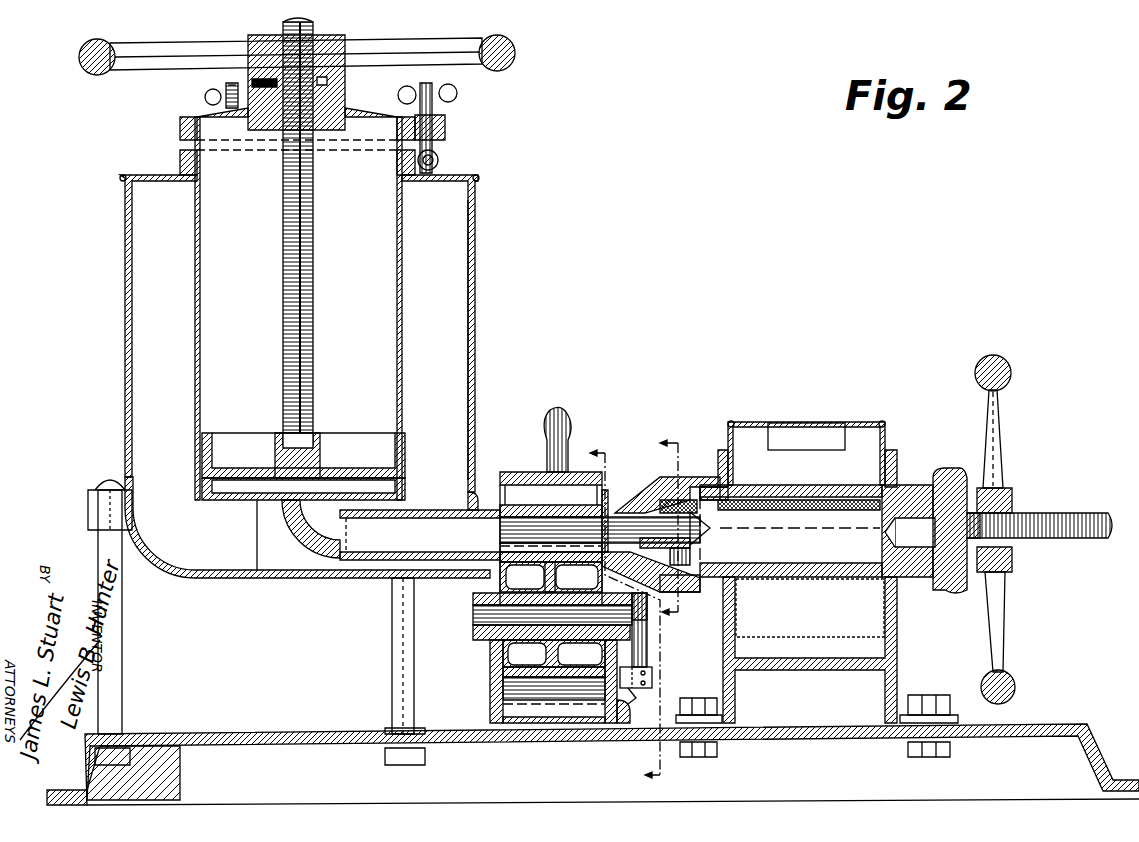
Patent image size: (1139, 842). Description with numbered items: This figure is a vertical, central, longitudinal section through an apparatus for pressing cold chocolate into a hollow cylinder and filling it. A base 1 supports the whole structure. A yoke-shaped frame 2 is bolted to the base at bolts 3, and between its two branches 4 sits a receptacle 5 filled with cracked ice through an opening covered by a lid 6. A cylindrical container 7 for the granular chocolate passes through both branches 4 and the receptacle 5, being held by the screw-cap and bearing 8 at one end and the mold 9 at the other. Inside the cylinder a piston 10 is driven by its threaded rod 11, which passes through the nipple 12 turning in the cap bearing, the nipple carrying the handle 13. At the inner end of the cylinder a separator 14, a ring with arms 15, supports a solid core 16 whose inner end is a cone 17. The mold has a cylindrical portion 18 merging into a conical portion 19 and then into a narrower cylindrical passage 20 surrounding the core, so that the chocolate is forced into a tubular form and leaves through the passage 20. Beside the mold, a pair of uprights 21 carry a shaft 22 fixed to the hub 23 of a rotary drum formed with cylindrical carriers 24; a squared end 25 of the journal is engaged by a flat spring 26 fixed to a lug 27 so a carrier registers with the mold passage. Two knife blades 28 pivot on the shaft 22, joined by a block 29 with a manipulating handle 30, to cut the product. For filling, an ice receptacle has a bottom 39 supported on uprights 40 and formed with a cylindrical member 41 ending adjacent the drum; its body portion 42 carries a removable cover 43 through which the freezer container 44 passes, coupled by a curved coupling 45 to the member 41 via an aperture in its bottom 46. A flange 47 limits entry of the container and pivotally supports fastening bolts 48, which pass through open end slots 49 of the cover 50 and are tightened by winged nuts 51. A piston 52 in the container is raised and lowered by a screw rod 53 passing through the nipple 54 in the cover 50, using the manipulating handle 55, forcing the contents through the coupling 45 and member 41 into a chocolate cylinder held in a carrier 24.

The base 1 is at (268, 734).
The frame 2 is at (896, 666).
The bolts 3 is at (926, 706).
The branches 4 is at (721, 452).
The receptacle 5 is at (820, 640).
The lid 6 is at (836, 422).
The cylindrical container 7 is at (793, 522).
The screw-cap and bearing 8 is at (934, 482).
The mold 9 is at (690, 492).
The piston 10 is at (880, 548).
The piston rod 11 is at (1030, 518).
The nipple 12 is at (1005, 500).
The handle 13 is at (1012, 608).
The separator 14 is at (684, 582).
The arms 15 is at (724, 494).
The core 16 is at (692, 548).
The cone 17 is at (712, 528).
The cylindrical portion 18 is at (666, 500).
The conical portion 19 is at (642, 506).
The cylindrical passage 20 is at (604, 572).
The uprights 21 is at (490, 680).
The shaft 22 is at (473, 614).
The hub 23 is at (530, 635).
The cylindrical carriers 24 is at (520, 525).
The squared end 25 is at (650, 622).
The flat spring 26 is at (650, 679).
The lug 27 is at (642, 692).
The blades 28 is at (604, 495).
The block 29 is at (566, 472).
The manipulating handle 30 is at (552, 412).
The bottom 39 is at (190, 580).
The uprights 40 is at (113, 672).
The cylindrical member 41 is at (372, 560).
The cylindrical body portion 42 is at (475, 268).
The removable cover 43 is at (470, 176).
The container 44 is at (200, 310).
The curved coupling 45 is at (290, 518).
The container bottom 46 is at (208, 500).
The flange 47 is at (182, 160).
The fastening bolts 48 is at (232, 84).
The open end slots 49 is at (442, 130).
The cover 50 is at (182, 120).
The winged nuts 51 is at (208, 94).
The piston 52 is at (368, 445).
The screw rod 53 is at (314, 286).
The nipple 54 is at (268, 130).
The manipulating handle 55 is at (145, 55).